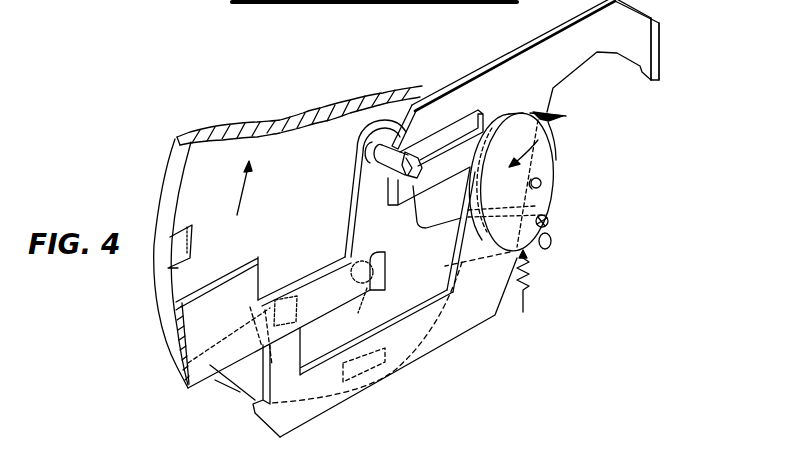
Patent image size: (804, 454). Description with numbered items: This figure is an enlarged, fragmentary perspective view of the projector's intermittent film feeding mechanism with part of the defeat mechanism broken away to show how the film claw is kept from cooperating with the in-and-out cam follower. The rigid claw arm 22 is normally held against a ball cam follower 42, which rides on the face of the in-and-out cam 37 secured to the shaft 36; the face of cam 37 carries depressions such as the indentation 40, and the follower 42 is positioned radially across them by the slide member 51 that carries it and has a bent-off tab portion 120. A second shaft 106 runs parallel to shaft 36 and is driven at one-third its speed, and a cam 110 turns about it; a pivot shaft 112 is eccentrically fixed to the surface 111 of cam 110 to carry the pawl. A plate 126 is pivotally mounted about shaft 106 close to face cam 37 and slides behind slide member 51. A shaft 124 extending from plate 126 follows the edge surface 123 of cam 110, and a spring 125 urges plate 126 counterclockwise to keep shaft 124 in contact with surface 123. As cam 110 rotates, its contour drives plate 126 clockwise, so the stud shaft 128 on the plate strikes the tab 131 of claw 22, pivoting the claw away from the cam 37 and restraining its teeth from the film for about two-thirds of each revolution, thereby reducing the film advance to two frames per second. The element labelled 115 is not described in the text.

The claw arm 22 is at (302, 284).
The shaft 36 is at (388, 163).
The in-and-out cam 37 is at (250, 143).
The indentation 40 is at (186, 256).
The ball cam follower 42 is at (296, 322).
The slide member 51 is at (313, 2).
The shaft 106 is at (541, 182).
The cam 110 is at (570, 143).
The cam surface 111 is at (558, 130).
The pivot shaft 112 is at (550, 222).
The hanger strip 115 is at (556, 0).
The bent-off tab portion 120 is at (660, 50).
The edge surface 123 is at (518, 118).
The shaft 124 is at (552, 242).
The spring 125 is at (528, 284).
The plate 126 is at (388, 226).
The stud shaft 128 is at (314, 297).
The tab 131 is at (387, 270).